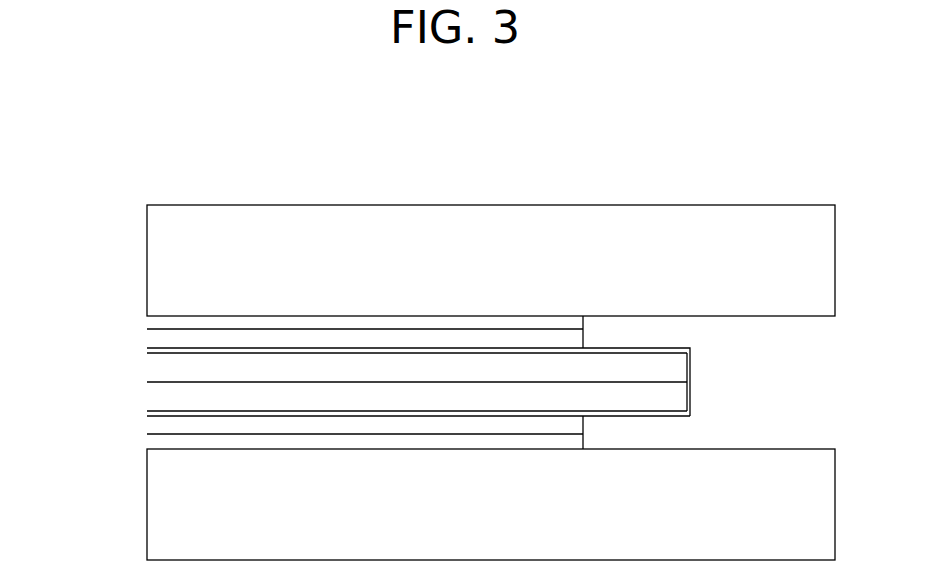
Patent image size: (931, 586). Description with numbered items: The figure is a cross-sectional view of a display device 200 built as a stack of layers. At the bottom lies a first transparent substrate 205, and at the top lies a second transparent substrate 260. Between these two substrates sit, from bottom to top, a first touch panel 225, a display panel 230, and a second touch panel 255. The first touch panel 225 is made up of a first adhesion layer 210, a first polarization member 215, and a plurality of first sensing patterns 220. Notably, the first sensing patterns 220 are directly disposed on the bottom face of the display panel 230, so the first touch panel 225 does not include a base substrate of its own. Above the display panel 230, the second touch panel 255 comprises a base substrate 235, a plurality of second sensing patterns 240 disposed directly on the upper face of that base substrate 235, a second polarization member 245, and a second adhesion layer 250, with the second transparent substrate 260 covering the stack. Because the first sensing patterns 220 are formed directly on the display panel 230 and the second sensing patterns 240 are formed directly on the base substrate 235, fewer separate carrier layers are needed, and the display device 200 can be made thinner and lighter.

The display device 200 is at (505, 141).
The first transparent substrate 205 is at (147, 503).
The first adhesion layer 210 is at (150, 442).
The first polarization member 215 is at (150, 426).
The first sensing patterns 220 is at (150, 414).
The first touch panel 225 is at (69, 407).
The display panel 230 is at (152, 390).
The base substrate 235 is at (150, 370).
The second sensing patterns 240 is at (148, 351).
The second polarization member 245 is at (152, 339).
The second adhesion layer 250 is at (148, 322).
The second touch panel 255 is at (69, 290).
The second transparent substrate 260 is at (147, 258).